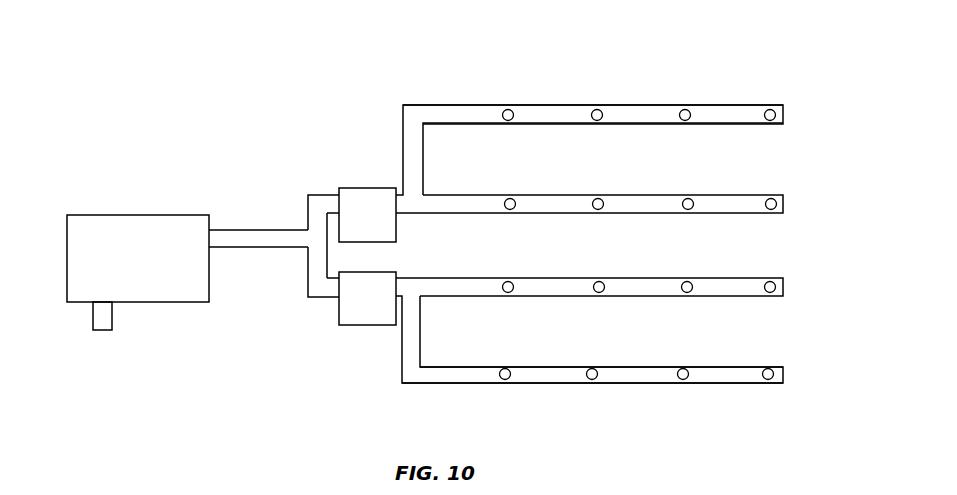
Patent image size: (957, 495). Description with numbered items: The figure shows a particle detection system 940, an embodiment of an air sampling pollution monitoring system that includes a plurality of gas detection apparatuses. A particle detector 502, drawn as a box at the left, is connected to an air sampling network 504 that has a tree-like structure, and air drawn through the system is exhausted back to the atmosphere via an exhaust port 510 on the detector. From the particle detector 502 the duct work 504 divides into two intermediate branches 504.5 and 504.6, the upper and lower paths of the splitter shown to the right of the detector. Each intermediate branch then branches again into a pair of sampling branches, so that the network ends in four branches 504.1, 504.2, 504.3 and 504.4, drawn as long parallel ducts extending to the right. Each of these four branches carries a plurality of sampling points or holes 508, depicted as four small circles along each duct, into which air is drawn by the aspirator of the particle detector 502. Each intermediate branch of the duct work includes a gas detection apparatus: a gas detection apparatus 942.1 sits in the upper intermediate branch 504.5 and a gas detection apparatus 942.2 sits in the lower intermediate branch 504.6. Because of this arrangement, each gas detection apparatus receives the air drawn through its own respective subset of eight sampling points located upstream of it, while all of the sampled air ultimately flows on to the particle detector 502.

The particle detection system 940 is at (688, 74).
The particle detector 502 is at (143, 215).
The exhaust port 510 is at (112, 318).
The air sampling network 504 is at (478, 105).
The branch 504.1 is at (745, 105).
The branch 504.2 is at (745, 194).
The branch 504.3 is at (743, 277).
The branch 504.4 is at (742, 383).
The intermediate branch 504.5 is at (308, 212).
The intermediate branch 504.6 is at (323, 297).
The gas detection apparatus 942.1 is at (363, 188).
The gas detection apparatus 942.2 is at (370, 325).
The sampling points 508 is at (768, 121).